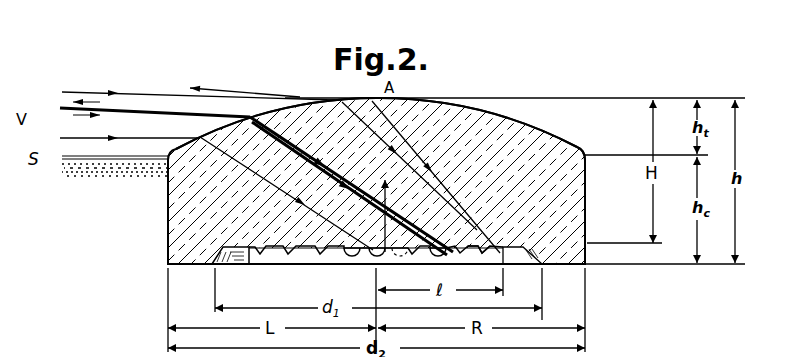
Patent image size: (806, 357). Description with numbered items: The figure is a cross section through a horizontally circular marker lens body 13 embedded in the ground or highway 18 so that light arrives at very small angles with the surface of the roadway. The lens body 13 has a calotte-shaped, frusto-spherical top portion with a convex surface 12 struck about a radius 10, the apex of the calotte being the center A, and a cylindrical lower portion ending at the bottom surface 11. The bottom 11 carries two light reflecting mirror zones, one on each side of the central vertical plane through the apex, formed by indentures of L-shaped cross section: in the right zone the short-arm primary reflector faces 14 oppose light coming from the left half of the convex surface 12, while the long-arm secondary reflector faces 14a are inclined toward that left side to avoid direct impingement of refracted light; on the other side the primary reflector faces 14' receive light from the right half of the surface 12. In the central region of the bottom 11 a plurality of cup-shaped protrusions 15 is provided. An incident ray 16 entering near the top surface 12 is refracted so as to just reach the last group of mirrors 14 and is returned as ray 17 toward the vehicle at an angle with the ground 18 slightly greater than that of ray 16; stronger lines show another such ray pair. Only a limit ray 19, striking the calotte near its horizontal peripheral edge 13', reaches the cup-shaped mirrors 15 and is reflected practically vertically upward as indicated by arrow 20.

The radius 10 is at (376, 178).
The bottom surface 11 is at (556, 269).
The convex surface 12 is at (468, 105).
The lens body 13 is at (600, 186).
The horizontal peripheral edge 13' is at (604, 145).
The primary reflector faces 14 is at (474, 267).
The primary reflector faces 14' is at (237, 274).
The secondary reflector faces 14a is at (290, 266).
The cup-shaped protrusions 15 is at (368, 266).
The incident ray 16 is at (96, 92).
The reflected ray 17 is at (222, 91).
The ground or highway 18 is at (112, 175).
The limit ray 19 is at (137, 139).
The arrow 20 is at (388, 189).